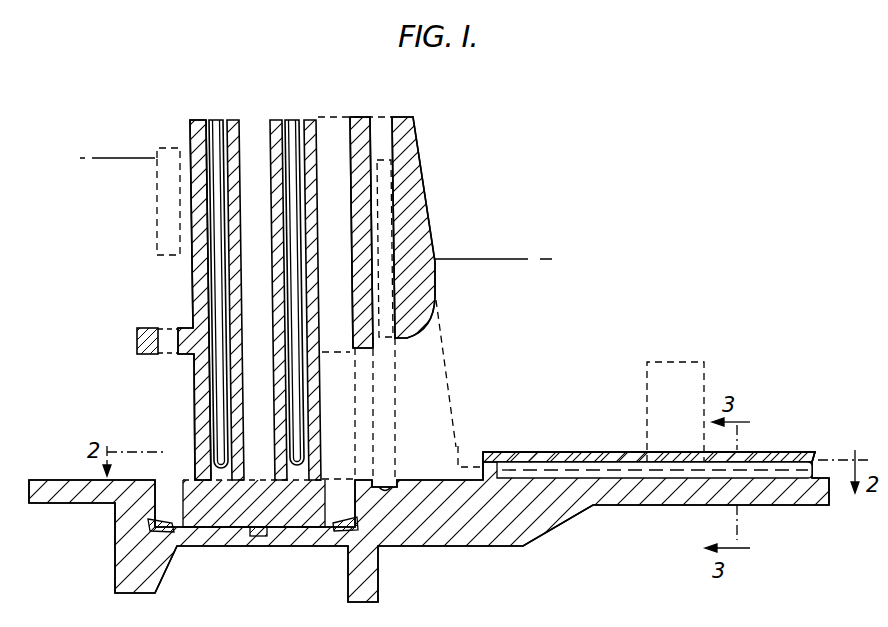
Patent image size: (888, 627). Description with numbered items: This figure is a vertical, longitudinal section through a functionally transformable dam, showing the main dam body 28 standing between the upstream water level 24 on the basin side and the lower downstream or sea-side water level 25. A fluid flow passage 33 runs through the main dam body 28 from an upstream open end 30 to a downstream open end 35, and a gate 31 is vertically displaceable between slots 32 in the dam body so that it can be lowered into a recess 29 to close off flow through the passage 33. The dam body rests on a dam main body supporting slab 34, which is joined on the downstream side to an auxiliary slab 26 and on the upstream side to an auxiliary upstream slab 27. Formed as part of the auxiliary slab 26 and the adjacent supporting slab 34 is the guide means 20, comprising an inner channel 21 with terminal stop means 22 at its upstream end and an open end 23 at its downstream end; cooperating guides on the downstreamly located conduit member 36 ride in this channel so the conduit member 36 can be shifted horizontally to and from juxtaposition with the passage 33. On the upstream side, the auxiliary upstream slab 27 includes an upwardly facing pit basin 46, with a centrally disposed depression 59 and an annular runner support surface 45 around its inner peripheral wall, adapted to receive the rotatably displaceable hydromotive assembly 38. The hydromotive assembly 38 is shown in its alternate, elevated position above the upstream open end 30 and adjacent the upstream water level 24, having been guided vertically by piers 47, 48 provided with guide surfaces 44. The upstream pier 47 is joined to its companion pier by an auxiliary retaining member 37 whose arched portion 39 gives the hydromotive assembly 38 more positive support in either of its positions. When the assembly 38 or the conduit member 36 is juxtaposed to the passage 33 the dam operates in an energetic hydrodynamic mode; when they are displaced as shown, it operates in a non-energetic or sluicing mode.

The guide means 20 is at (578, 452).
The inner channel 21 is at (629, 462).
The terminal stop means 22 is at (487, 455).
The open end 23 is at (811, 479).
The upstream water level 24 is at (118, 157).
The downstream water level 25 is at (506, 259).
The auxiliary slab 26 is at (668, 504).
The auxiliary upstream slab 27 is at (57, 497).
The main dam body 28 is at (424, 273).
The recess 29 is at (392, 492).
The upstream open end 30 is at (356, 414).
The gate 31 is at (392, 161).
The slots 32 is at (378, 125).
The fluid flow passage 33 is at (434, 399).
The dam main body supporting slab 34 is at (521, 521).
The downstream open end 35 is at (448, 368).
The conduit member 36 is at (685, 403).
The auxiliary retaining member 37 is at (186, 326).
The hydromotive assembly 38 is at (160, 214).
The arched portion 39 is at (137, 340).
The guide surfaces 44 is at (292, 124).
The runner support surface 45 is at (166, 519).
The pit basin 46 is at (210, 520).
The pier 47 is at (193, 421).
The pier 48 is at (279, 440).
The centrally disposed depression 59 is at (262, 526).